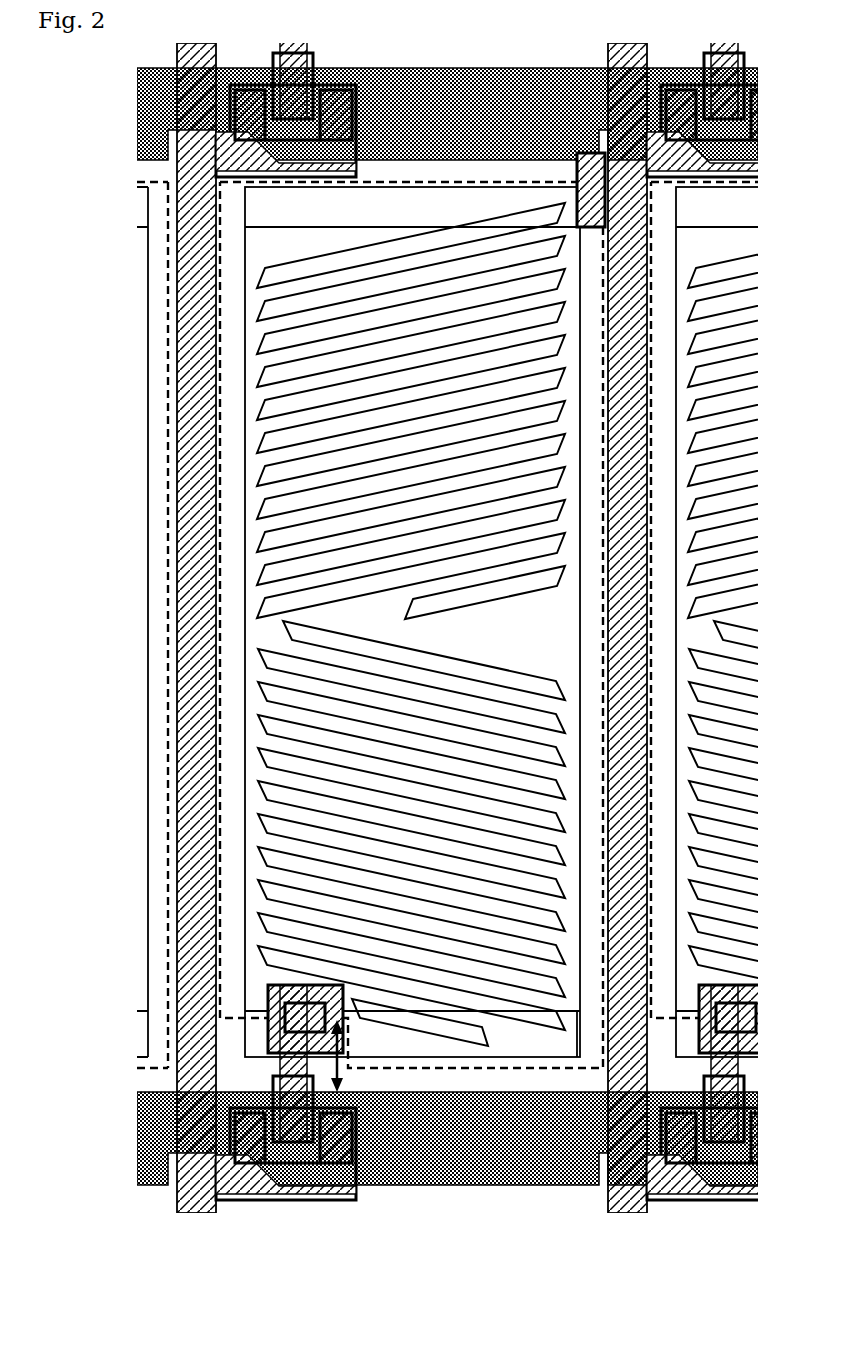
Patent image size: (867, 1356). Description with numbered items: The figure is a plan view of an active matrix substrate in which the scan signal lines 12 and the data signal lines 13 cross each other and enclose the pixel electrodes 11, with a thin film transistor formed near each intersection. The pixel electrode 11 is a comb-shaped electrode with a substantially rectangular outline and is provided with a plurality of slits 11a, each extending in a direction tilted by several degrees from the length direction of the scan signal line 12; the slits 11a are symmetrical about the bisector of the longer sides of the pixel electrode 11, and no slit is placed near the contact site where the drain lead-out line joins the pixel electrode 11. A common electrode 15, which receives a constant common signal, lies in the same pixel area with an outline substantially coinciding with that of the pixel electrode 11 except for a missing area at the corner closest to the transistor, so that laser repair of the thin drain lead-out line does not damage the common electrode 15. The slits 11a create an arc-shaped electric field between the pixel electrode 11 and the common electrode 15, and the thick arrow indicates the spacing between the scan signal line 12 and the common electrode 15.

The pixel electrode 11 is at (265, 632).
The slits 11a is at (268, 692).
The scan signal line 12 is at (150, 1135).
The data signal line 13 is at (192, 835).
The common electrode 15 is at (215, 512).